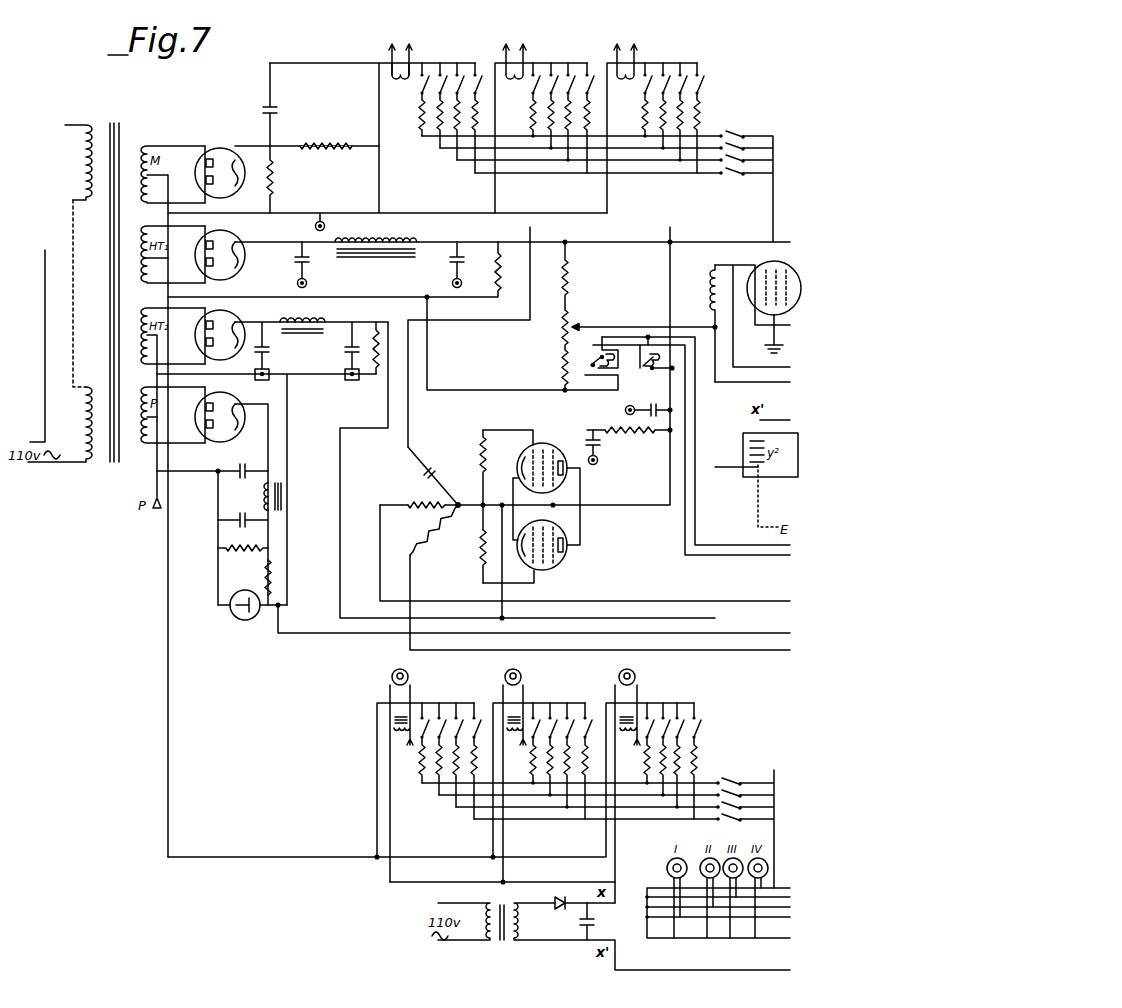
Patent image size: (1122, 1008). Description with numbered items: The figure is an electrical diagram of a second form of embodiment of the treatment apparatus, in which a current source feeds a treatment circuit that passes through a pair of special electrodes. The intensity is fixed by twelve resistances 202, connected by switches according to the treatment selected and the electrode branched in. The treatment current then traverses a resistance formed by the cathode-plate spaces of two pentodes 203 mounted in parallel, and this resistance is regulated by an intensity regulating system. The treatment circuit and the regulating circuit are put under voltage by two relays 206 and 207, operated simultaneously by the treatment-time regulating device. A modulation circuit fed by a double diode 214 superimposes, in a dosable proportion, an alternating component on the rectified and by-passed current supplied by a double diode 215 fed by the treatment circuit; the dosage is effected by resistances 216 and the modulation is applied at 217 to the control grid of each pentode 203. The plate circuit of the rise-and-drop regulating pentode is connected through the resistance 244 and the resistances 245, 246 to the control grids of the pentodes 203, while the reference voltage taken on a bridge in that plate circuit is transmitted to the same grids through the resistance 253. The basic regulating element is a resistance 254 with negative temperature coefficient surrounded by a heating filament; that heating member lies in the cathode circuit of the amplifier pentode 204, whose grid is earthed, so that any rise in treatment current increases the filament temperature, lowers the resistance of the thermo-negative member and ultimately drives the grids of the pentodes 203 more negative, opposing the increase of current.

The resistances 202 is at (718, 724).
The pentodes 203 is at (548, 446).
The pentode 204 is at (772, 267).
The relay 206 is at (598, 357).
The relay 207 is at (636, 368).
The double diode 214 is at (226, 196).
The double diode 215 is at (229, 271).
The resistances 216 is at (705, 53).
The modulation application point 217 is at (461, 511).
The resistance 244 is at (425, 530).
The resistance 245 is at (479, 564).
The resistance 246 is at (482, 469).
The resistance 253 is at (431, 500).
The resistance with negative temperature coefficient 254 is at (703, 303).